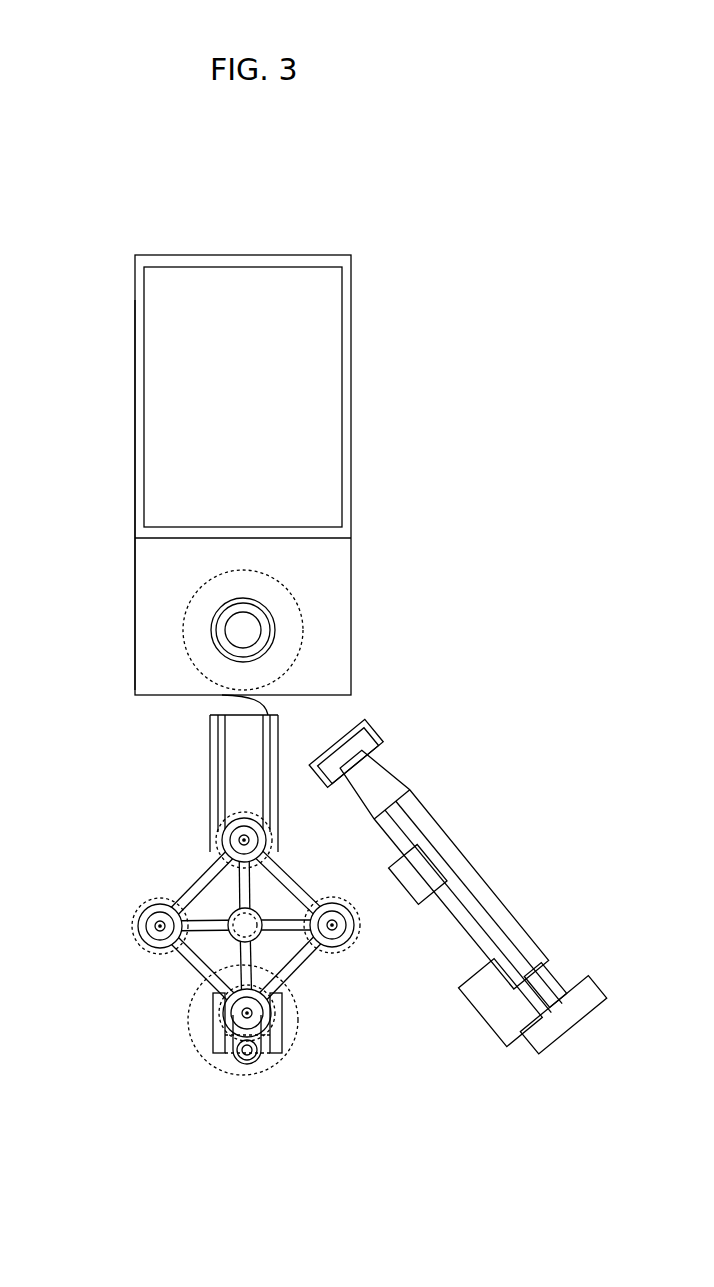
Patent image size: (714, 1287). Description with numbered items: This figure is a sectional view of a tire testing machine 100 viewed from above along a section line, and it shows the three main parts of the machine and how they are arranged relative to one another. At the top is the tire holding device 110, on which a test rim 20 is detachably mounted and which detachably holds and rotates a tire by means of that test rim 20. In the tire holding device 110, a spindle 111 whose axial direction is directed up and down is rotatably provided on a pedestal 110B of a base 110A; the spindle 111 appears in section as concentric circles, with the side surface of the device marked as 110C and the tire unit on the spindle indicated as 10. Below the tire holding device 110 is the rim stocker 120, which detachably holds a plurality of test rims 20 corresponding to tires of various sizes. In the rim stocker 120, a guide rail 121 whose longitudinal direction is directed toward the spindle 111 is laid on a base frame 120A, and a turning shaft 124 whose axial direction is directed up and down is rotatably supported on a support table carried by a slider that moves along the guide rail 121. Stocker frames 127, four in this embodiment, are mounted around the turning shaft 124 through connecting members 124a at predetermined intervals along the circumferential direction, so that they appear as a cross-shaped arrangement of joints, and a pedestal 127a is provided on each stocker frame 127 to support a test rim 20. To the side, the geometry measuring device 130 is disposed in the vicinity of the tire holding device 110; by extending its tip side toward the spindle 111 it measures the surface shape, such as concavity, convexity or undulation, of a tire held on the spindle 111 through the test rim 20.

The tire testing machine 100 is at (480, 248).
The tire holding device 110 is at (392, 557).
The base 110A is at (352, 397).
The pedestal 110B is at (278, 633).
The side surface of main body 110C is at (135, 387).
The spindle 111 is at (278, 607).
The camera unit 10 is at (185, 627).
The rim stocker 120 is at (190, 1080).
The base frame 120A is at (210, 732).
The guide rail 121 is at (222, 700).
The turning shaft 124 is at (190, 960).
The connecting member 124a is at (192, 886).
The stocker frame 127 is at (225, 816).
The pedestal 127a is at (218, 836).
The test rim 20 is at (212, 782).
The geometry measuring device 130 is at (499, 826).